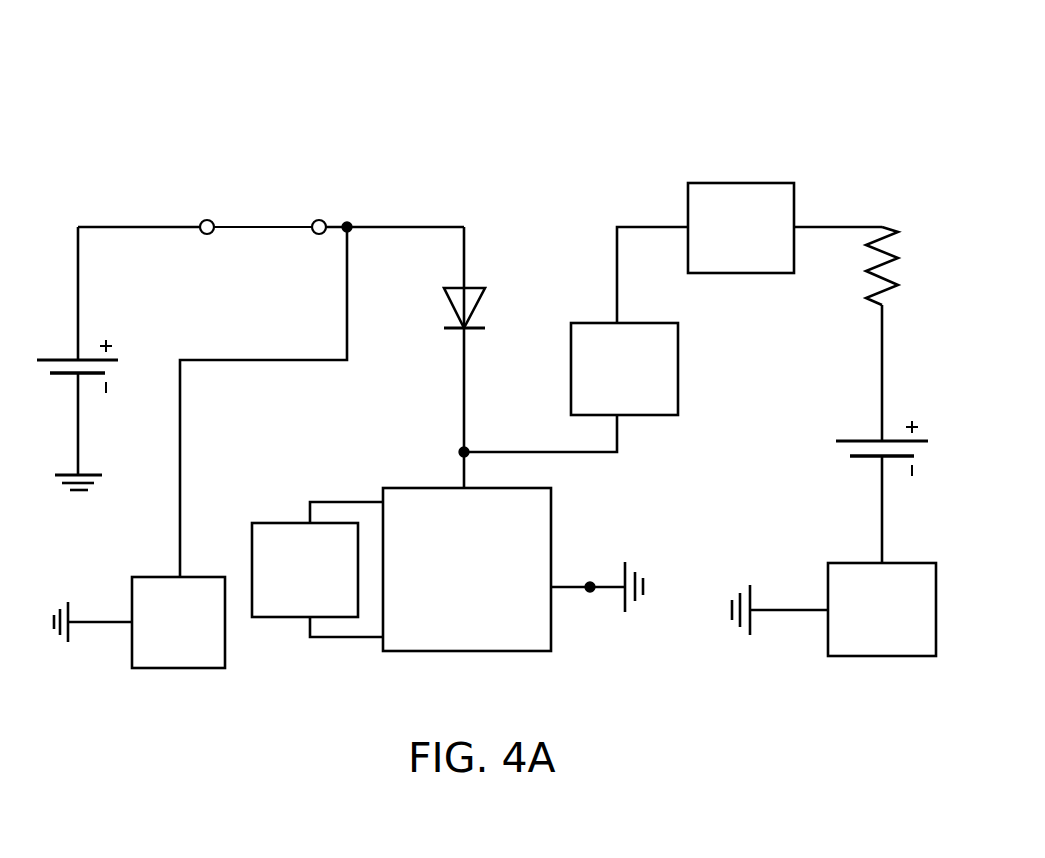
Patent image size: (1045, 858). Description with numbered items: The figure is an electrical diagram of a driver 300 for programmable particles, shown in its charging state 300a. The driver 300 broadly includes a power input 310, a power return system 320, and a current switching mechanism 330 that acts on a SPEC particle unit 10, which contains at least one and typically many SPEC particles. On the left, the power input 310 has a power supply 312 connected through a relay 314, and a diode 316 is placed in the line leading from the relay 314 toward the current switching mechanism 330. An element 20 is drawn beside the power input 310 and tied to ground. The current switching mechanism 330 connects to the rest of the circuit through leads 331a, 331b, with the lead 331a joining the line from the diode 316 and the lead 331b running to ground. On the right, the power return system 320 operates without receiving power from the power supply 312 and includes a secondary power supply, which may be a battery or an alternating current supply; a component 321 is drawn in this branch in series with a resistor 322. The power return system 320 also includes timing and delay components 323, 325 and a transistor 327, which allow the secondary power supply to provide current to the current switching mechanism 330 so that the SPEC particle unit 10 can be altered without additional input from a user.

The driver 300 is at (215, 72).
The power input 310 is at (117, 177).
The power supply 312 is at (127, 333).
The relay 314 is at (248, 226).
The diode 316 is at (487, 285).
The charging state 300a is at (539, 144).
The power return system 320 is at (823, 152).
The auxiliary battery 321 is at (861, 424).
The resistor 322 is at (868, 287).
The timing and delay component 323 is at (863, 621).
The timing and delay component 325 is at (722, 239).
The transistor 327 is at (605, 380).
The current switching mechanism 330 is at (448, 581).
The lead 331a is at (460, 452).
The lead 331b is at (590, 592).
The SPEC particle unit 10 is at (292, 581).
The module 20 is at (165, 633).